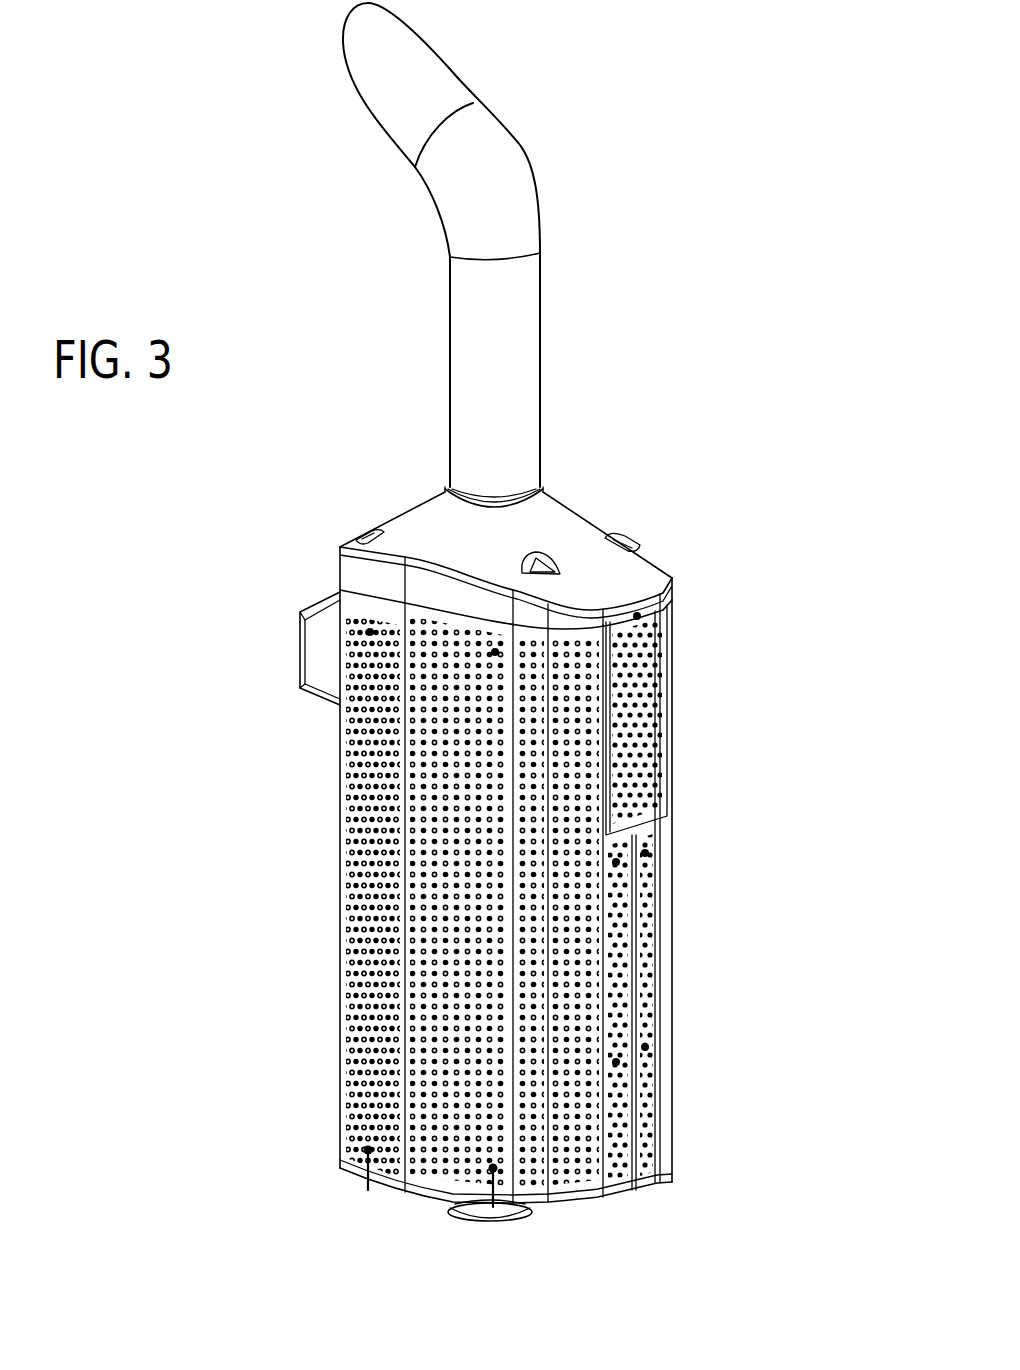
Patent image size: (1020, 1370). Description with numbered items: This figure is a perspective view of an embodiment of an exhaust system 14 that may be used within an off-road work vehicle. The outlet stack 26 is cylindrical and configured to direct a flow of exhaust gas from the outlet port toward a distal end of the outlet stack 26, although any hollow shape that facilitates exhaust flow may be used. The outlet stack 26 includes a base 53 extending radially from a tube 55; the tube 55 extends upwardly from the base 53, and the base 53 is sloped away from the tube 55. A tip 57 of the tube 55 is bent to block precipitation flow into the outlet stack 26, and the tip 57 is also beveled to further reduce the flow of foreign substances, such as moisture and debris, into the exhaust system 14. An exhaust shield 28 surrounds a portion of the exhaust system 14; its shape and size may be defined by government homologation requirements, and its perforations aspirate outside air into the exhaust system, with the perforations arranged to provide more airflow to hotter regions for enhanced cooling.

The exhaust system 14 is at (828, 126).
The outlet stack 26 is at (355, 309).
The exhaust shield 28 is at (415, 918).
The base 53 is at (620, 582).
The tube 55 is at (505, 382).
The tip 57 is at (478, 185).